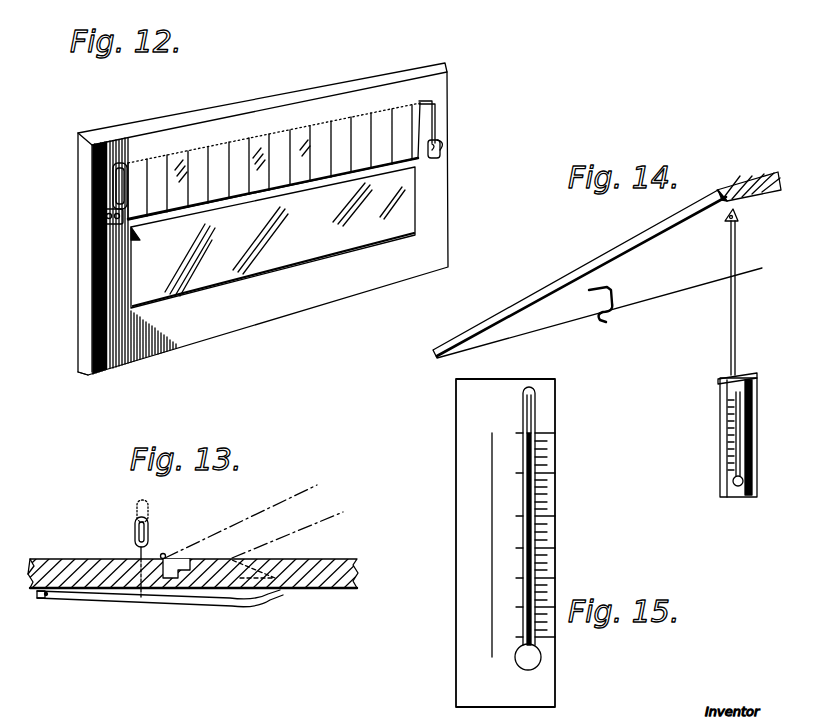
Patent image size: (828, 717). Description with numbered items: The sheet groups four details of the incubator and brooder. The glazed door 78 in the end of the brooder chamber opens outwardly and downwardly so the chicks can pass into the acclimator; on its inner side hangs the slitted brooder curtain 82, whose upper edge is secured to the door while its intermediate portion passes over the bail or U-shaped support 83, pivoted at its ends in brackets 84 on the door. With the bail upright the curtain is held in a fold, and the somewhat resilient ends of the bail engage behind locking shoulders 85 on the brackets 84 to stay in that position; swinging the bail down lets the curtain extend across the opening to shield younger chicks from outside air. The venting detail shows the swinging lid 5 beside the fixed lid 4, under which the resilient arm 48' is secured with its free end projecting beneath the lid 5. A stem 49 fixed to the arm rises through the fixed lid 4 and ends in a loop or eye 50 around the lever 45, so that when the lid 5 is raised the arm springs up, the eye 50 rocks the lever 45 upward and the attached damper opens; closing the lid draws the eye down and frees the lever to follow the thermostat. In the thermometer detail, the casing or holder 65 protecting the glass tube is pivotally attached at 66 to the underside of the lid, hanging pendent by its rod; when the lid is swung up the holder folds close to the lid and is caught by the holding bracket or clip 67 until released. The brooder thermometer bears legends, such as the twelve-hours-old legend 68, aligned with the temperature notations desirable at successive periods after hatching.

In FIG. 12, the glazed door 78 is at (310, 297).
In FIG. 12, the slitted brooder curtain 82 is at (320, 150).
In FIG. 12, the bail or U-shaped support 83 is at (433, 110).
In FIG. 12, the brackets 84 is at (441, 153).
In FIG. 12, the locking shoulders 85 is at (440, 144).
In FIG. 13, the lid 5 is at (325, 558).
In FIG. 14, the lid 5 is at (543, 283).
In FIG. 13, the fixed lid 4 is at (43, 560).
In FIG. 13, the lever 45 is at (136, 533).
In FIG. 13, the stem 49 is at (165, 554).
In FIG. 13, the loop or eye 50 is at (135, 518).
In FIG. 13, the resilient arm 48' is at (160, 620).
In FIG. 14, the pivotal attachment 66 is at (727, 221).
In FIG. 14, the holding bracket or clip 67 is at (603, 318).
In FIG. 14, the casing or holder 65 is at (722, 437).
In FIG. 15, the legend 68 is at (456, 469).